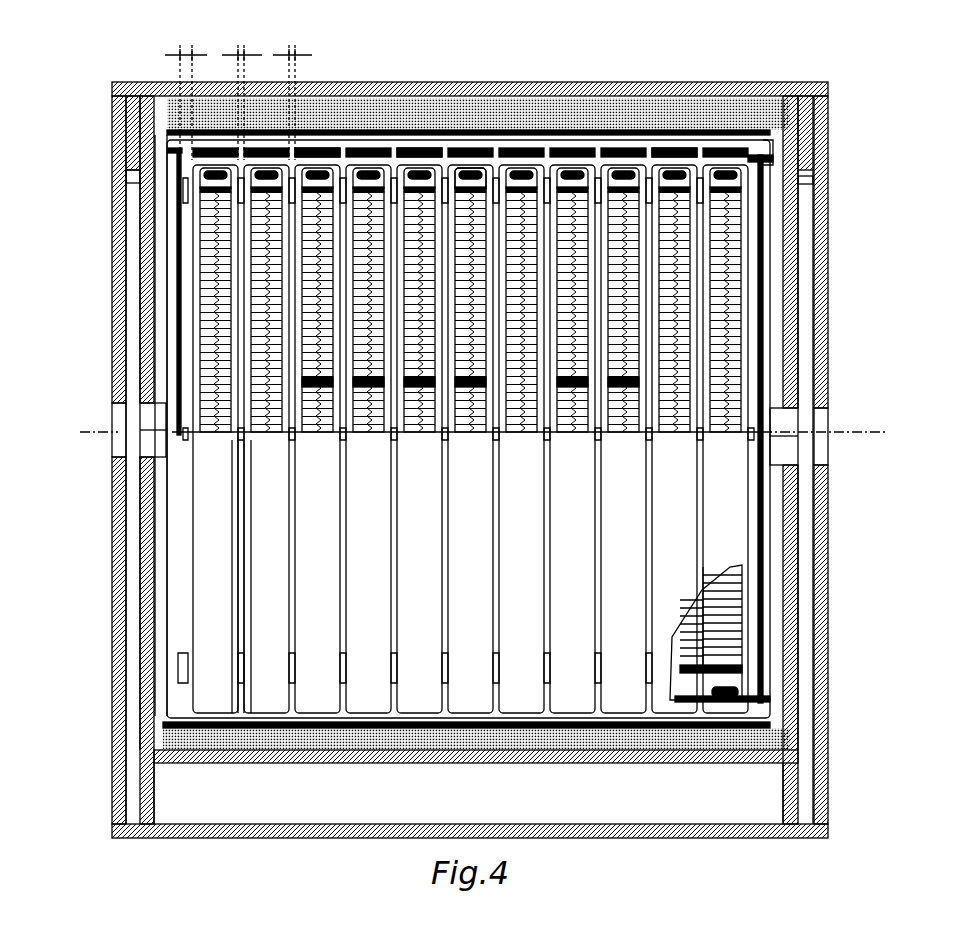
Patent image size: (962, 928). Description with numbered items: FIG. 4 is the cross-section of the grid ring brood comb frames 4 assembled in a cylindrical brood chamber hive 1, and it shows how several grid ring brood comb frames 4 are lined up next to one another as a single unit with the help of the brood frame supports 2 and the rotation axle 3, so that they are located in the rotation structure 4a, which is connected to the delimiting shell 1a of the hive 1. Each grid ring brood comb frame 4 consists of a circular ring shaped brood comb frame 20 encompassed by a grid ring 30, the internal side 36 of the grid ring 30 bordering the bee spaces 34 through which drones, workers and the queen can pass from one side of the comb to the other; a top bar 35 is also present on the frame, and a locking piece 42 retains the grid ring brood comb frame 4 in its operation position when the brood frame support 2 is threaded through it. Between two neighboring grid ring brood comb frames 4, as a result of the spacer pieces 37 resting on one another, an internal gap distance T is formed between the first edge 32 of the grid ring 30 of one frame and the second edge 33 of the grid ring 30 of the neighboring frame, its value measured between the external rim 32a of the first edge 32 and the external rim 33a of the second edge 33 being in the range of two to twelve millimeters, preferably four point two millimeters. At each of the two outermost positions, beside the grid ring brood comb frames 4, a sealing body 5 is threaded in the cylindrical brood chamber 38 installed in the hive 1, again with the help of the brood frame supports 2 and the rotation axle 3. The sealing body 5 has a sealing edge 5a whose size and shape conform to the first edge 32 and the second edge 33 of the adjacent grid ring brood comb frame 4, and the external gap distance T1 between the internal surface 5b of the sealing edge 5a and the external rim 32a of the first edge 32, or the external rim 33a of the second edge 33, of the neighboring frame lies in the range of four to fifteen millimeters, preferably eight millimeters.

The hive 1 is at (840, 293).
The delimiting shell 1a is at (640, 148).
The brood frame support 2 is at (772, 196).
The rotation axle 3 is at (740, 705).
The grid ring brood comb frame 4 is at (674, 150).
The rotation structure 4a is at (802, 452).
The sealing body 5 is at (174, 240).
The sealing edge 5a is at (772, 152).
The internal surface 5b is at (754, 152).
The brood comb frame 20 is at (565, 131).
The grid ring 30 is at (626, 146).
The first edge 32 is at (252, 535).
The external rim 32a is at (238, 550).
The second edge 33 is at (236, 613).
The external rim 33a is at (248, 580).
The bee spaces 34 is at (430, 150).
The top bar 35 is at (331, 148).
The internal side 36 is at (480, 153).
The spacer pieces 37 is at (291, 438).
The cylindrical brood chamber 38 is at (745, 718).
The locking piece 42 is at (291, 663).
The internal gap distance T is at (241, 52).
The external gap distance T1 is at (182, 52).